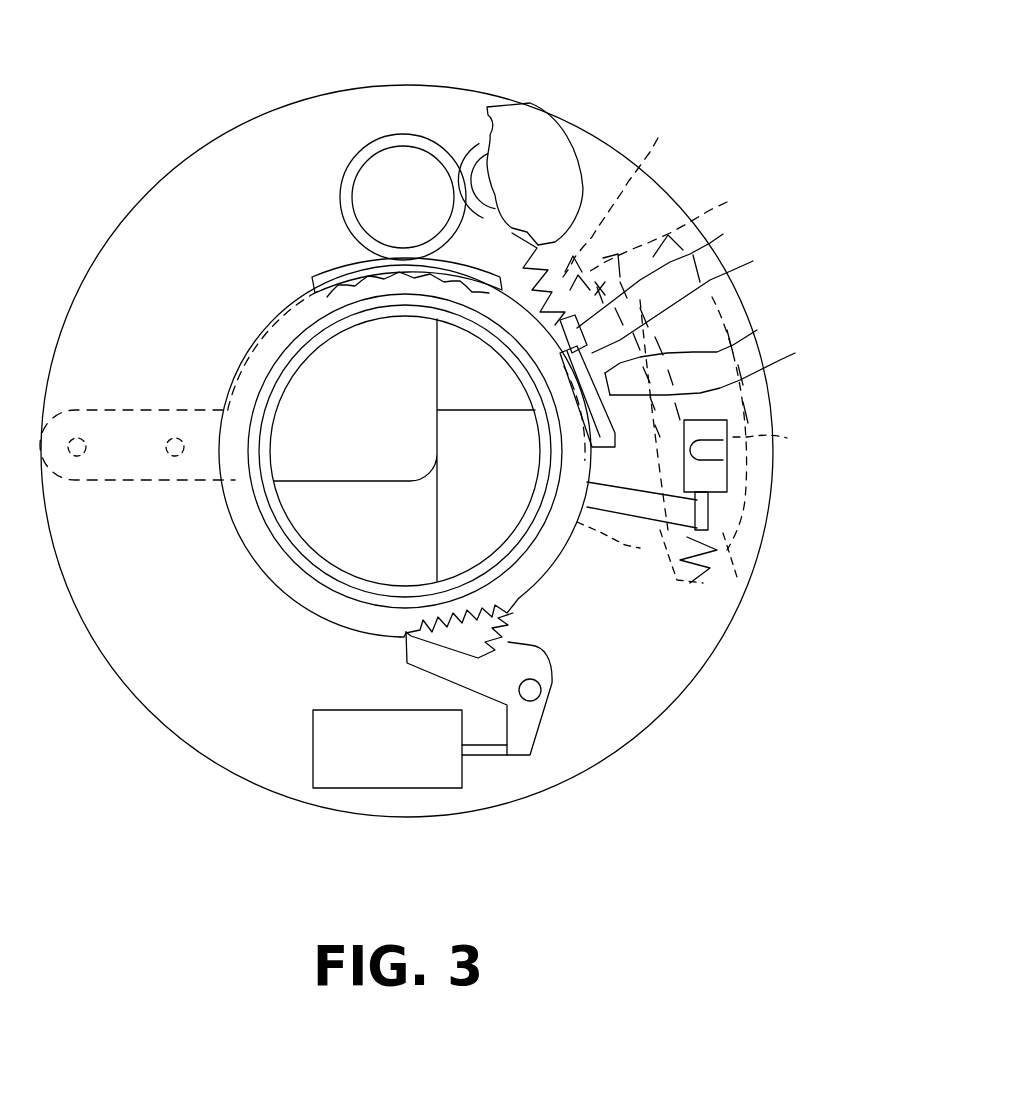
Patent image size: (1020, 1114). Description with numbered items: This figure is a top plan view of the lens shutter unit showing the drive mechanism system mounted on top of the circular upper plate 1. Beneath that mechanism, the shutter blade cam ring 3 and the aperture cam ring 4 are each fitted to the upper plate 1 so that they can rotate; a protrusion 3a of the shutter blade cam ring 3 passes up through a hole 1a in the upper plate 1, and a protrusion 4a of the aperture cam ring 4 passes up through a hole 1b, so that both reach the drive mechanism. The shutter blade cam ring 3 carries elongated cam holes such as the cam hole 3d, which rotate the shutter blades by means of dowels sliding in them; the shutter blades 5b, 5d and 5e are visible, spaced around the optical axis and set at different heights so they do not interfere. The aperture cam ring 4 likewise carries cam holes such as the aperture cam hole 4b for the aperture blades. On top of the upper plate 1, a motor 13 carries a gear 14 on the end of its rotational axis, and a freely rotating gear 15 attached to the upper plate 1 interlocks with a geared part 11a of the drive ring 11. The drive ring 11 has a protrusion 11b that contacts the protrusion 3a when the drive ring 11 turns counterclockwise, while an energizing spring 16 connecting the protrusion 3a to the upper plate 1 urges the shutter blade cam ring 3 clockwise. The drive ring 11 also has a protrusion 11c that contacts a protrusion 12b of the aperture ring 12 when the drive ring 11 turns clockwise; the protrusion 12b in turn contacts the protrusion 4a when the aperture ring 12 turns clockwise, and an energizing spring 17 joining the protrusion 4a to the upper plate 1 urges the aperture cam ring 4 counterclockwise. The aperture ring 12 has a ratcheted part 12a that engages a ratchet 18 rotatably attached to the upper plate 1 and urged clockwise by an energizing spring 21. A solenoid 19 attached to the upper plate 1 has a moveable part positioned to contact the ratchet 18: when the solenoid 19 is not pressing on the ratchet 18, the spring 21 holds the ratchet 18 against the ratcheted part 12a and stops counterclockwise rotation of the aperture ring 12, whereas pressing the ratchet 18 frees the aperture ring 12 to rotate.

The upper plate 1 is at (382, 105).
The hole 1a is at (733, 420).
The hole 1b is at (757, 330).
The shutter blade cam ring 3 is at (727, 202).
The protrusion 3a is at (727, 477).
The cam hole 3d is at (787, 438).
The aperture cam ring 4 is at (609, 276).
The protrusion 4a is at (753, 261).
The aperture cam hole 4b is at (715, 361).
The shutter blade 5b is at (320, 437).
The shutter blade 5d is at (508, 497).
The shutter blade 5e is at (458, 363).
The drive ring 11 is at (363, 273).
The geared part 11a is at (327, 278).
The protrusion 11b is at (690, 512).
The protrusion 11c is at (600, 292).
The aperture ring 12 is at (530, 563).
The ratcheted part 12a is at (517, 600).
The protrusion 12b is at (723, 234).
The motor 13 is at (547, 145).
The gear 14 is at (485, 163).
The gear 15 is at (413, 163).
The energizing spring 16 is at (705, 583).
The energizing spring 17 is at (565, 258).
The ratchet 18 is at (527, 737).
The solenoid 19 is at (362, 766).
The energizing spring 21 is at (558, 688).